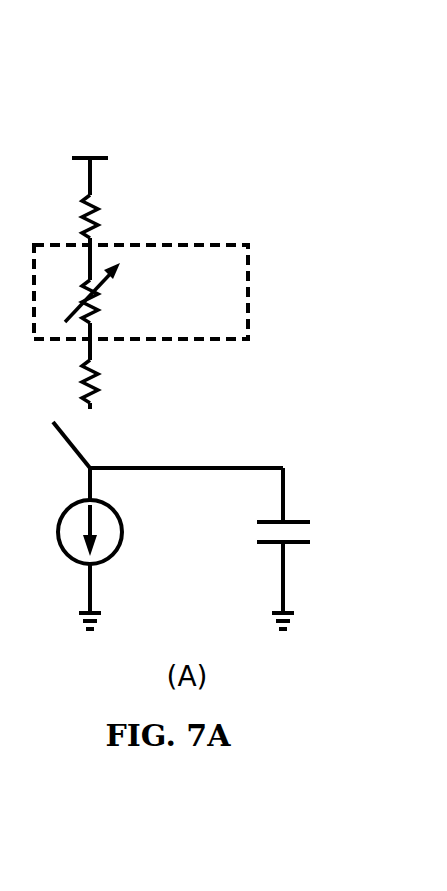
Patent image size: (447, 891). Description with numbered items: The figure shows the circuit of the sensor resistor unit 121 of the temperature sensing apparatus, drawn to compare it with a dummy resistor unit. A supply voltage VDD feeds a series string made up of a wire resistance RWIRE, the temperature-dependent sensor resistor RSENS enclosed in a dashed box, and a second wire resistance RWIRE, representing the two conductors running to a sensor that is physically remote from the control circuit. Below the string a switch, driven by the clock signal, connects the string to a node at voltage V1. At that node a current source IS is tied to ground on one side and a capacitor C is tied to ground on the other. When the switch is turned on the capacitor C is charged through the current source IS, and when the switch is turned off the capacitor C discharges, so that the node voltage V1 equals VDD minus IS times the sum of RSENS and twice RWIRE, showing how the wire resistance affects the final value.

The sensor resistor unit 121 is at (182, 356).
The supply voltage VDD is at (89, 160).
The wire resistance RWIRE is at (148, 302).
The sensor resistor RSENS is at (141, 302).
The first node voltage V1 is at (168, 445).
The current source IS is at (73, 548).
The capacitor C is at (298, 548).